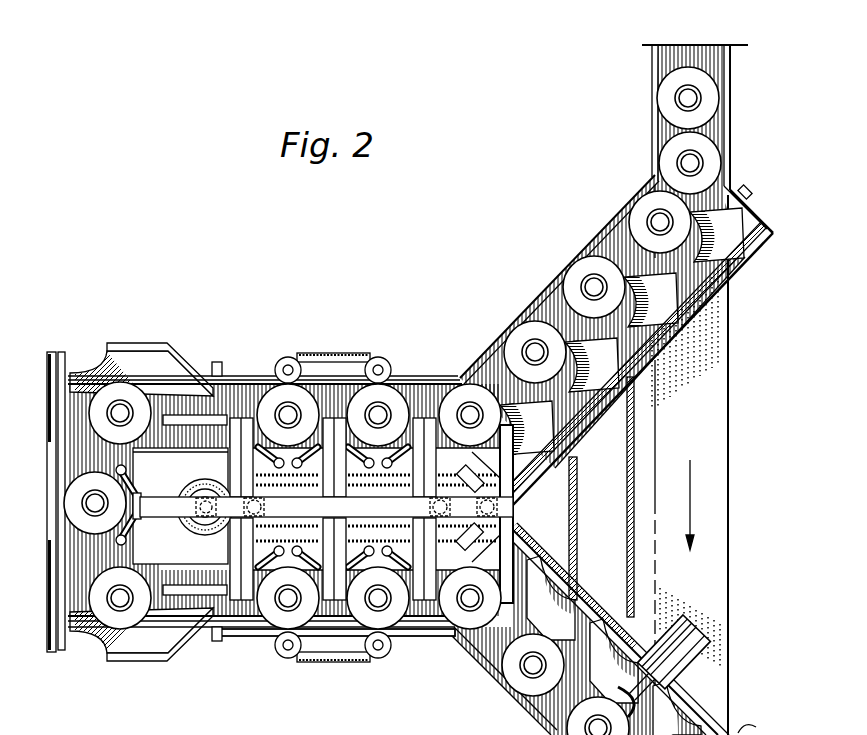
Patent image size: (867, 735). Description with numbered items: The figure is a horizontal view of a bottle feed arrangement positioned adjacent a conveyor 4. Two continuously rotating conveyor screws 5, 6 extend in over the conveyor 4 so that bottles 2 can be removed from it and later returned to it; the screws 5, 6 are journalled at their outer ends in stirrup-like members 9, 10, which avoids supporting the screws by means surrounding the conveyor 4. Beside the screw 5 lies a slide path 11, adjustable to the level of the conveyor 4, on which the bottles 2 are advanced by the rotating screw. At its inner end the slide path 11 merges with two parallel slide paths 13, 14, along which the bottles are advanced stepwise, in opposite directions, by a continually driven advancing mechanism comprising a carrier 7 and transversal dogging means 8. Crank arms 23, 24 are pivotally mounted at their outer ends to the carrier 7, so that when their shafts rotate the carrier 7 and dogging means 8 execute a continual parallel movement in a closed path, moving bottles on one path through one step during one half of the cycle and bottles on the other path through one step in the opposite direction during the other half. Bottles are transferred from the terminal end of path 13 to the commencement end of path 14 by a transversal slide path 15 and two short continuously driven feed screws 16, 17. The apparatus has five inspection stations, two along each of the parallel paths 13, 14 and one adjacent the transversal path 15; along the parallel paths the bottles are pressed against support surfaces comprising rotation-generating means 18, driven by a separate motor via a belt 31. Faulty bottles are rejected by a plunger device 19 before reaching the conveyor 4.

The bottles 2 is at (712, 93).
The conveyor 4 is at (705, 355).
The conveyor screw 5 is at (632, 236).
The conveyor screw 6 is at (582, 597).
The carrier 7 is at (412, 612).
The transversal dogging means 8 is at (412, 384).
The stirrup-like member 9 is at (745, 262).
The stirrup-like member 10 is at (760, 725).
The slide path 11 is at (537, 303).
The parallel slide path 13 is at (253, 384).
The parallel slide path 14 is at (222, 622).
The transversal slide path 15 is at (125, 552).
The short feed screw 16 is at (148, 343).
The short feed screw 17 is at (133, 650).
The rotation-generating means 18 is at (290, 357).
The plunger device 19 is at (692, 643).
The crank arm 23 is at (513, 507).
The crank arm 24 is at (186, 487).
The belt 31 is at (325, 665).